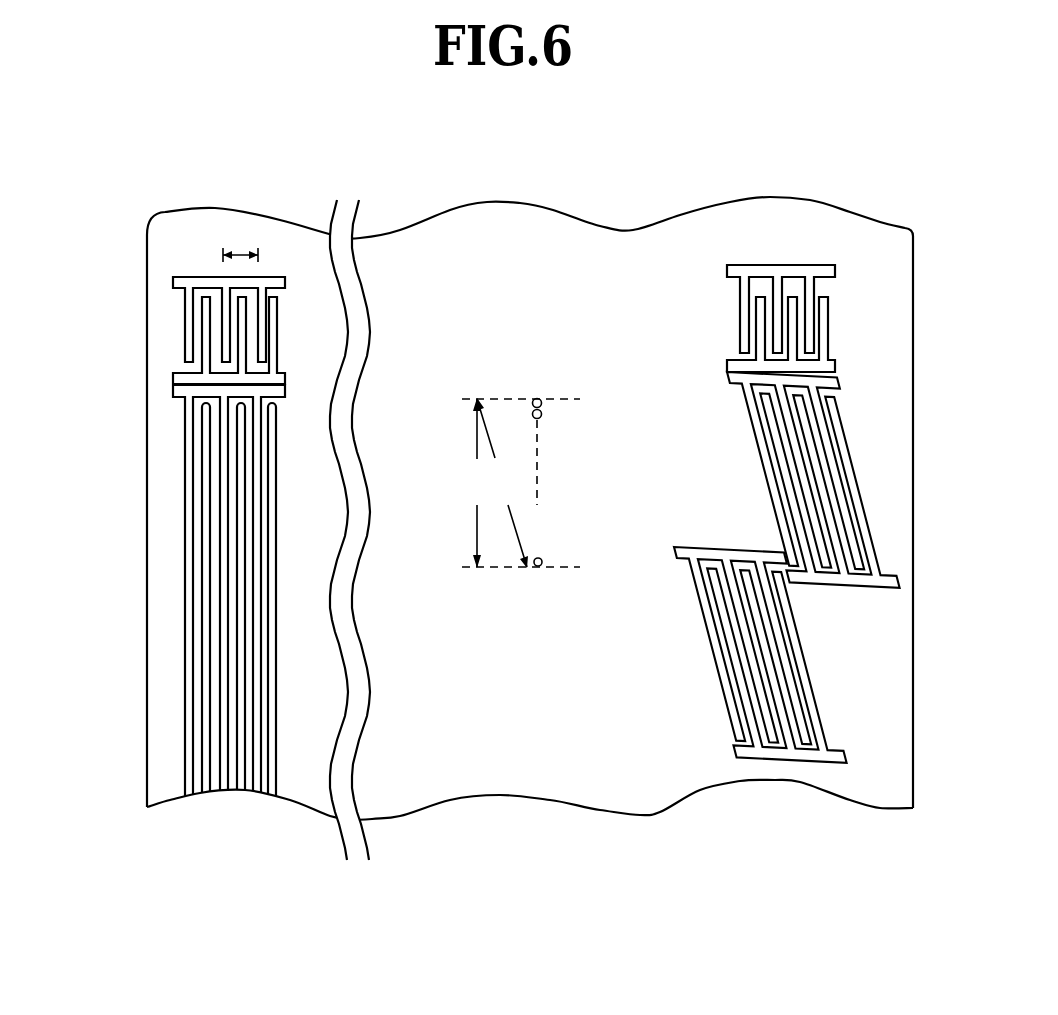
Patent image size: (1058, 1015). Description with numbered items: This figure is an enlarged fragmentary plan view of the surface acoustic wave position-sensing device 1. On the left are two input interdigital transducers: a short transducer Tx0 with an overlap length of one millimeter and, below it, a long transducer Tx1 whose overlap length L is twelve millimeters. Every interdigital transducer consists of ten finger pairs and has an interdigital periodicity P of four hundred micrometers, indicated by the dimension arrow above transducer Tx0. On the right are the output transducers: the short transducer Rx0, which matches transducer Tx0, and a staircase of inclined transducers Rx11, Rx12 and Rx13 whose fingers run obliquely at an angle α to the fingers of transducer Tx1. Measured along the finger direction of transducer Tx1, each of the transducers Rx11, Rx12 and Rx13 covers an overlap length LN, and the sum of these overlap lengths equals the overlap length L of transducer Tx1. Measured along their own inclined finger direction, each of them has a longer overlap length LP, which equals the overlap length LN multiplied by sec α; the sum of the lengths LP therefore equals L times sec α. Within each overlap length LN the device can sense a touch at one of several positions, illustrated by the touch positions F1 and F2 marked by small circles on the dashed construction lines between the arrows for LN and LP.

The touch panel substrate 1 is at (525, 248).
The interdigital transducer Tx0 is at (187, 337).
The interdigital transducer Tx1 is at (188, 516).
The interdigital transducer Rx0 is at (810, 263).
The interdigital transducer Rx11 is at (845, 442).
The interdigital transducer Rx12 is at (810, 685).
The interdigital transducer Rx13 is at (697, 803).
The interdigital periodicity P is at (241, 250).
The touch position F1 is at (538, 397).
The touch position F2 is at (541, 417).
The overlap length LN is at (510, 483).
The overlap length LP is at (509, 483).